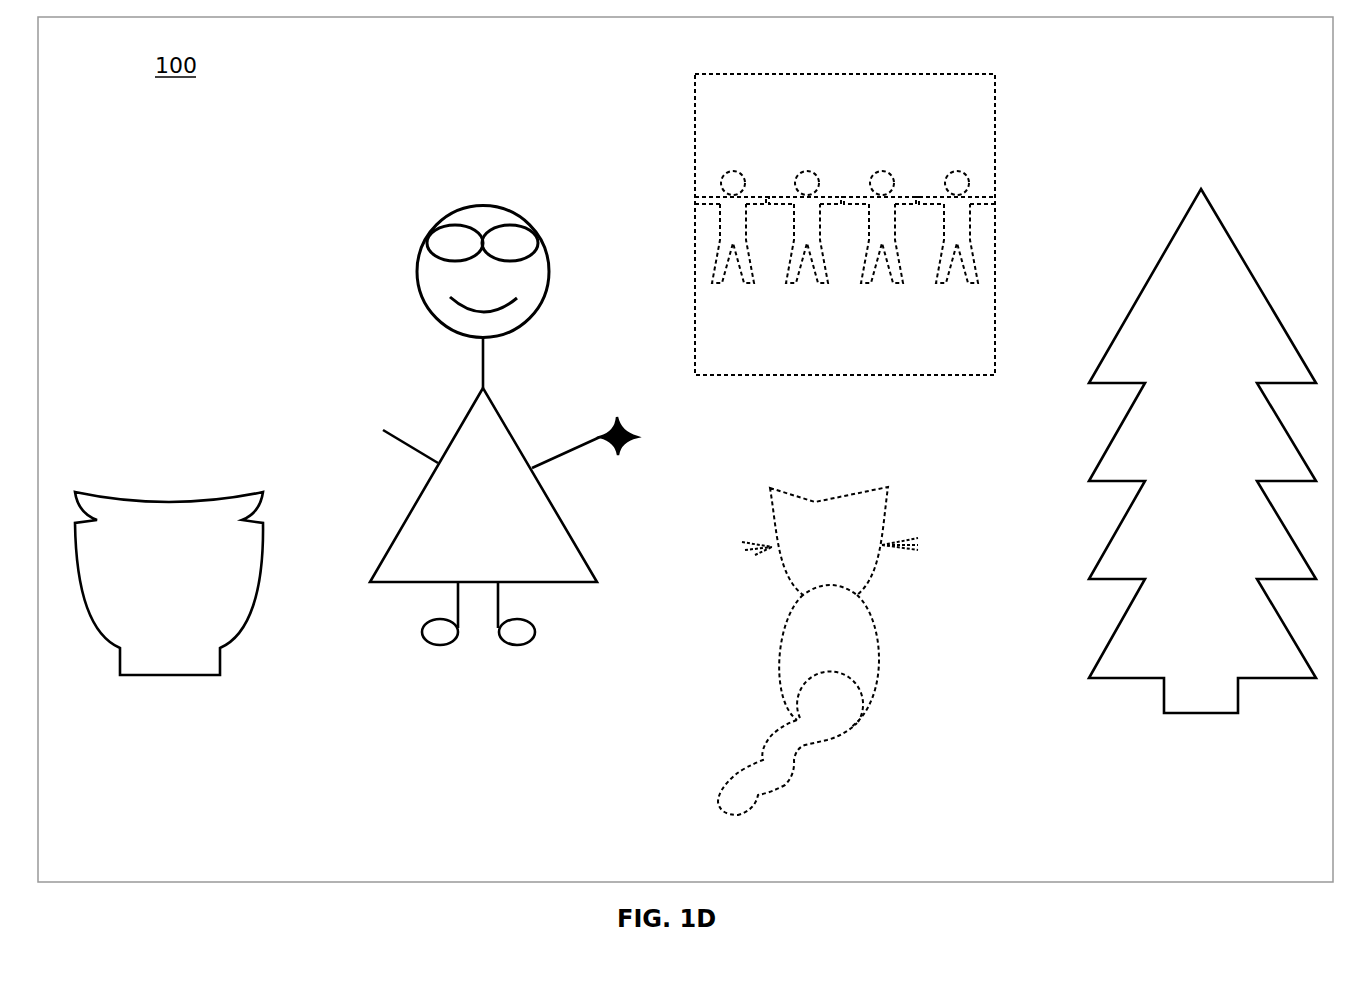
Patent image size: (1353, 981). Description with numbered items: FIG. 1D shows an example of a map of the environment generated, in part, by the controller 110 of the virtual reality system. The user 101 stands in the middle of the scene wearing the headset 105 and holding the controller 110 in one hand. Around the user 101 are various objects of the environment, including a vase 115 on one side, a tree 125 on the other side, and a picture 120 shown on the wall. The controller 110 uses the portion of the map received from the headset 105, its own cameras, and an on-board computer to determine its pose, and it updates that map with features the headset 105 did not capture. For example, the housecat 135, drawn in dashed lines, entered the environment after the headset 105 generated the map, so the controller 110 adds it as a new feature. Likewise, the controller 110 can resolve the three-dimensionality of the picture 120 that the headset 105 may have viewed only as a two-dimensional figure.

The user 101 is at (438, 165).
The headset 105 is at (453, 225).
The controller 110 is at (615, 455).
The vase 115 is at (168, 675).
The picture 120 is at (995, 74).
The tree 125 is at (1201, 713).
The housecat 135 is at (908, 710).